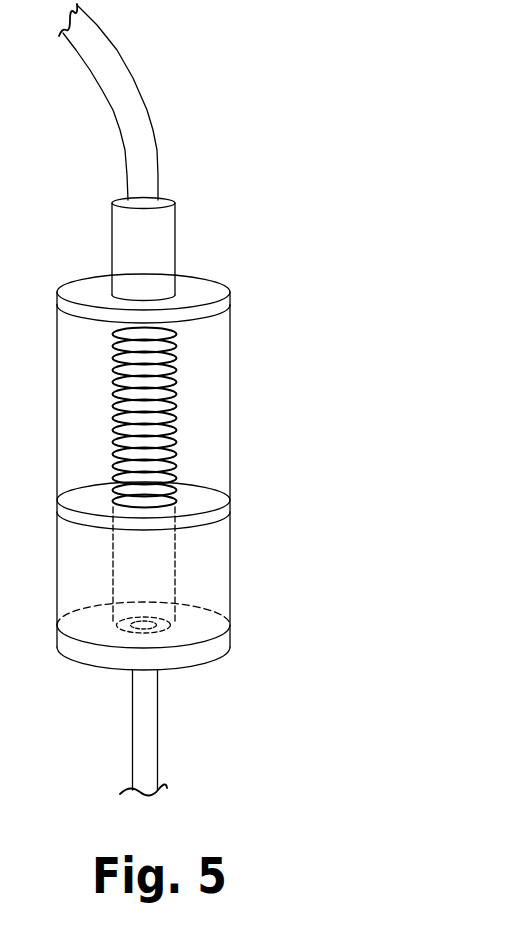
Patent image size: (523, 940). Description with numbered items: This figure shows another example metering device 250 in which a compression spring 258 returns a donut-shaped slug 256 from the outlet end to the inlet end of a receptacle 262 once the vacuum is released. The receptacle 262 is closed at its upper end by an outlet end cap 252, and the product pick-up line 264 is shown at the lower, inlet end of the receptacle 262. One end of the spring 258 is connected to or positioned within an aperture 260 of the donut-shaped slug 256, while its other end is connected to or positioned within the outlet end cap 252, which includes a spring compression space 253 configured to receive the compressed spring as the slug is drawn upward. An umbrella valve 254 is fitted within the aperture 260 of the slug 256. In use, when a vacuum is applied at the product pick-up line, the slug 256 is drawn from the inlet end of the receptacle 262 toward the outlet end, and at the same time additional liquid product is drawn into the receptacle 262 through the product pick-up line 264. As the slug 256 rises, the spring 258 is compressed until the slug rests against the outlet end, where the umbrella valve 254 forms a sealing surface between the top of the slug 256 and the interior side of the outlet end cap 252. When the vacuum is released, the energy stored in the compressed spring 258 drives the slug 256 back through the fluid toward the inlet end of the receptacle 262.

The metering device 250 is at (318, 186).
The outlet end cap 252 is at (203, 289).
The spring compression space 253 is at (165, 236).
The umbrella valve 254 is at (207, 497).
The donut-shaped slug 256 is at (213, 577).
The compression spring 258 is at (172, 391).
The aperture 260 is at (172, 630).
The receptacle 262 is at (222, 417).
The product pick-up line 264 is at (148, 723).